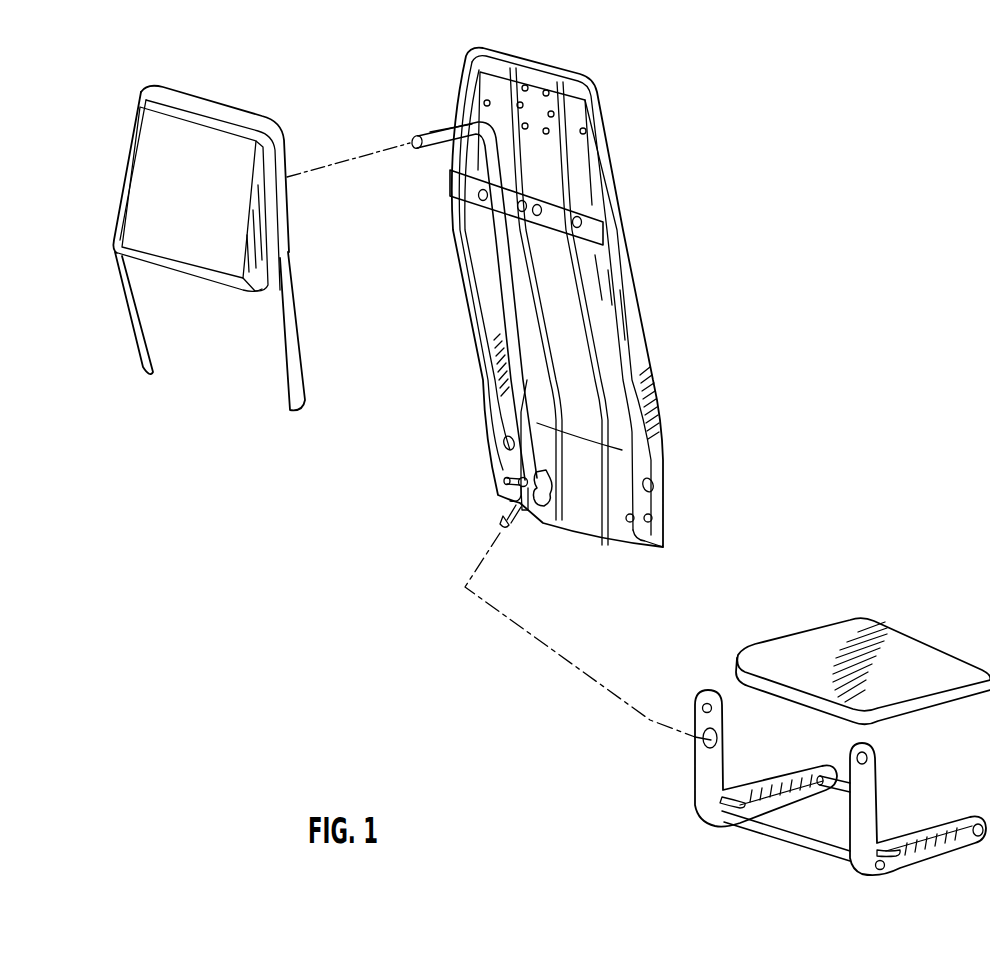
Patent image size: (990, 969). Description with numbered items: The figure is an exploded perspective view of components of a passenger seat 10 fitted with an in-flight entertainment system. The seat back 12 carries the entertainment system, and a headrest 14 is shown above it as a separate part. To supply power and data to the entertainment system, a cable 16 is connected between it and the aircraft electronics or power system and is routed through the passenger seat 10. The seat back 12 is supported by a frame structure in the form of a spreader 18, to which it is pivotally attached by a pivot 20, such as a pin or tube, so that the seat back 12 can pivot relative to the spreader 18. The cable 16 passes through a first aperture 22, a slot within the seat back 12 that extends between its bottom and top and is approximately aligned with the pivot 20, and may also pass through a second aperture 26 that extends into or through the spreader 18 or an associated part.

The passenger seat 10 is at (843, 215).
The seat back 12 is at (600, 96).
The headrest 14 is at (204, 203).
The cable 16 is at (437, 130).
The spreader 18 is at (697, 817).
The pivot 20 is at (523, 482).
The first aperture 22 is at (537, 500).
The second aperture 26 is at (722, 750).